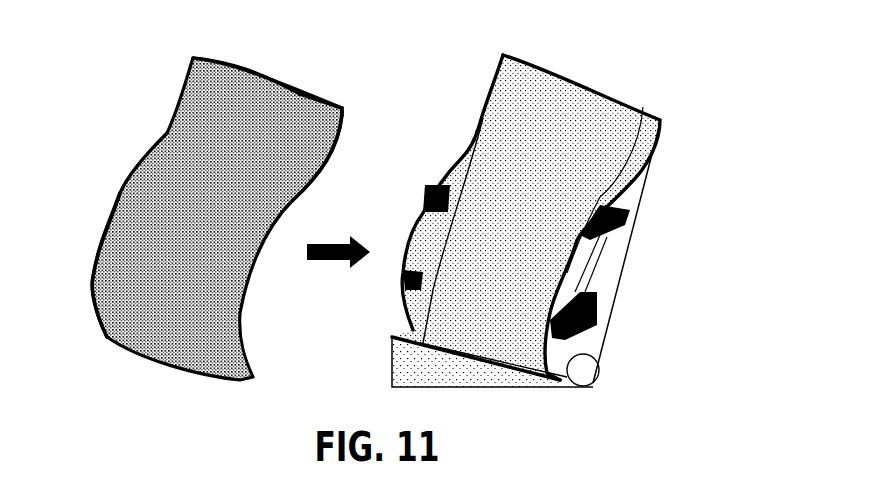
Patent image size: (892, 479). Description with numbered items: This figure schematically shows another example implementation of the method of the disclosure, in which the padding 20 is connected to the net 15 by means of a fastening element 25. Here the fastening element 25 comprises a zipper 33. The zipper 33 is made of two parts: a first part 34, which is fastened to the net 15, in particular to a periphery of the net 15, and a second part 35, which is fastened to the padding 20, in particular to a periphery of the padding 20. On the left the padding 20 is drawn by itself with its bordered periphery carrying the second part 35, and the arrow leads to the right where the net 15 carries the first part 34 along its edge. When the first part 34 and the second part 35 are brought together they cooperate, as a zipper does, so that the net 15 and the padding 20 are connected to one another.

The net 15 is at (548, 133).
The padding 20 is at (207, 187).
The fastening element 25 is at (110, 205).
The zipper 33 is at (233, 67).
The first part 34 is at (658, 137).
The second part 35 is at (303, 93).